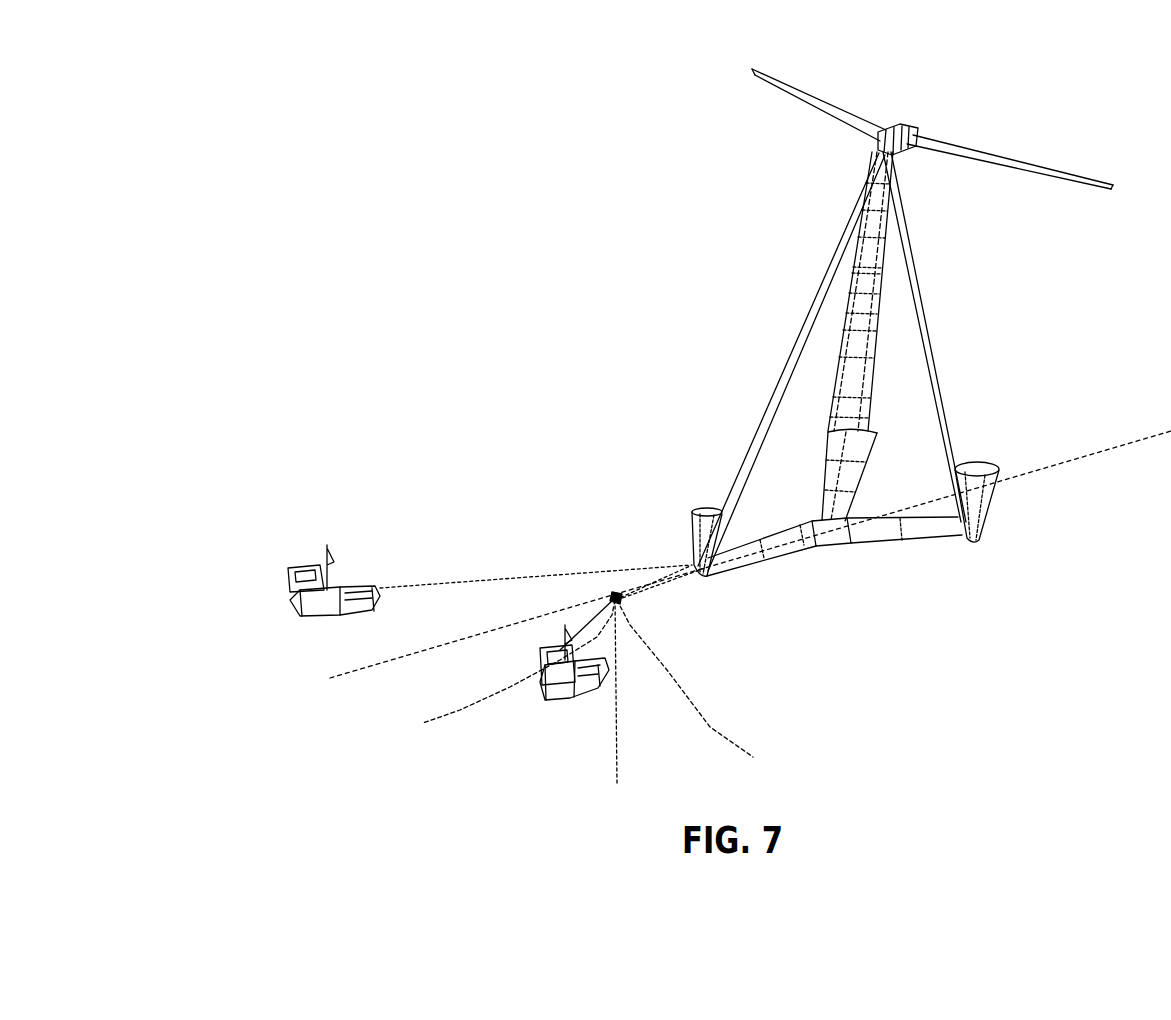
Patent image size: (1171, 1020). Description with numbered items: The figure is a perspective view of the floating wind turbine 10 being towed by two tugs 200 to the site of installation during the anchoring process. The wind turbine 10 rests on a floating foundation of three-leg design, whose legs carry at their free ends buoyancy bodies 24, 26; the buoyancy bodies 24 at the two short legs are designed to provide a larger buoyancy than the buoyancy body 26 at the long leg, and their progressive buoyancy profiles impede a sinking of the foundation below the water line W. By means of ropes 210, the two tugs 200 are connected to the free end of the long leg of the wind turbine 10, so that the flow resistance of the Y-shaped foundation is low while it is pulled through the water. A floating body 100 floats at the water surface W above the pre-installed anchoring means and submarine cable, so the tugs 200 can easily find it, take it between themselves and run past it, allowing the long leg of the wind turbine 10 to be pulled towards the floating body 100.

The floating wind turbine 10 is at (859, 322).
The buoyancy body 24 is at (973, 493).
The buoyancy body 26 is at (697, 531).
The floating body 100 is at (617, 600).
The tug 200 is at (288, 598).
The rope 210 is at (457, 580).
The water line W is at (730, 564).